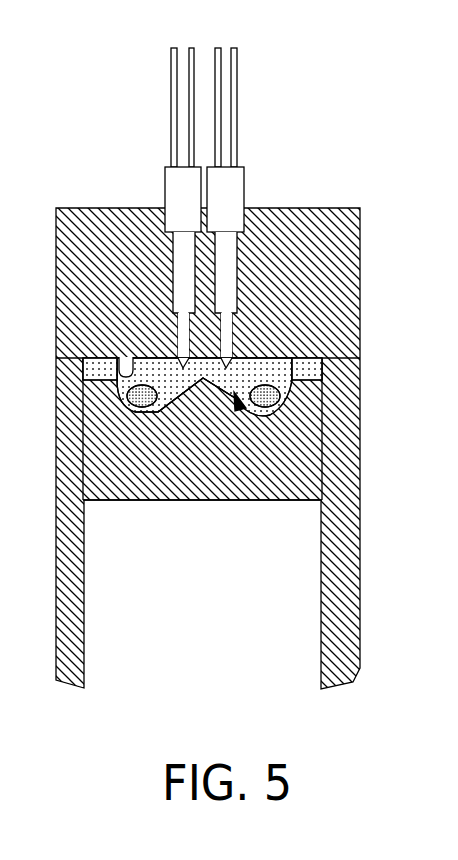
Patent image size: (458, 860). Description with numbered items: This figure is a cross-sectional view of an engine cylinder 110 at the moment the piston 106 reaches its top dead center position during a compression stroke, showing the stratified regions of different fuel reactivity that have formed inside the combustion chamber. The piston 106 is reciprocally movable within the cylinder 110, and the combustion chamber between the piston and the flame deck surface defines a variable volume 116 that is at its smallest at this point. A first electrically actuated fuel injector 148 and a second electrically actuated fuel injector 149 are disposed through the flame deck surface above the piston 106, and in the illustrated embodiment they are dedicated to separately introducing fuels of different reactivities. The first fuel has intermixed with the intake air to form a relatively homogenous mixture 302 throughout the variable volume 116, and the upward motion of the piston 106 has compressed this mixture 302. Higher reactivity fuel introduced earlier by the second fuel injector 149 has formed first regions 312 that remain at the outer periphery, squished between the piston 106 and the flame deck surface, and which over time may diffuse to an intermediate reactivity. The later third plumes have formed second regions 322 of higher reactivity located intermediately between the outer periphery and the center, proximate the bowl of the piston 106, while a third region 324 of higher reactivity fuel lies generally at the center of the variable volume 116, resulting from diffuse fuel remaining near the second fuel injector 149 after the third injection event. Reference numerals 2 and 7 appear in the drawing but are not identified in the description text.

The device 2 is at (100, 353).
The member 7 is at (28, 486).
The piston 106 is at (252, 472).
The cylinder 110 is at (96, 379).
The variable volume 116 is at (245, 417).
The first electrically actuated fuel injector 148 is at (185, 200).
The second electrically actuated fuel injector 149 is at (222, 200).
The mixture 302 is at (245, 368).
The first regions 312 is at (90, 367).
The second regions 322 is at (131, 408).
The third region 324 is at (203, 380).